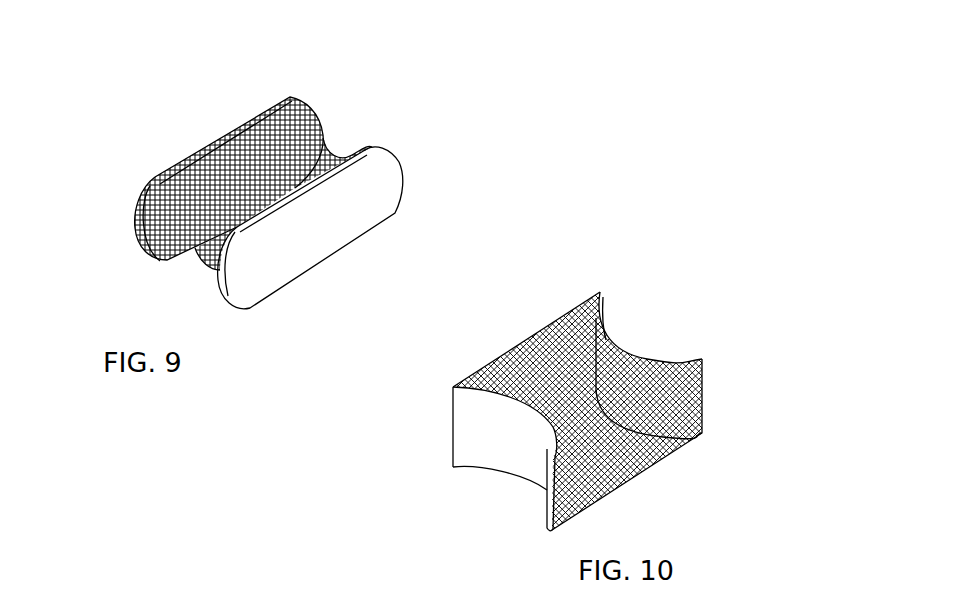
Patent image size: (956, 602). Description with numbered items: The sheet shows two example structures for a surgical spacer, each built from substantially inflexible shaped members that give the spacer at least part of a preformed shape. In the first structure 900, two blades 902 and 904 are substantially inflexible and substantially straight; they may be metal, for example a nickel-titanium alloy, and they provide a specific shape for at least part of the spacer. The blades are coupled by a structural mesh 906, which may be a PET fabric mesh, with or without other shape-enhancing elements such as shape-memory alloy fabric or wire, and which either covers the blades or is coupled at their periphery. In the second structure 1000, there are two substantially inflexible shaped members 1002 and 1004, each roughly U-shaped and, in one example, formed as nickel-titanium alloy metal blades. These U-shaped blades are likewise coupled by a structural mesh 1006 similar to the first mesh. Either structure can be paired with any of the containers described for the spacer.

In FIG. 9, the structure 900 is at (368, 83).
In FIG. 9, the blade 902 is at (180, 167).
In FIG. 9, the blade 904 is at (285, 280).
In FIG. 9, the structural mesh 906 is at (163, 238).
In FIG. 10, the structure 1000 is at (698, 275).
In FIG. 10, the substantially inflexible shaped member 1002 is at (603, 313).
In FIG. 10, the substantially inflexible shaped member 1004 is at (470, 437).
In FIG. 10, the structural mesh 1006 is at (632, 455).